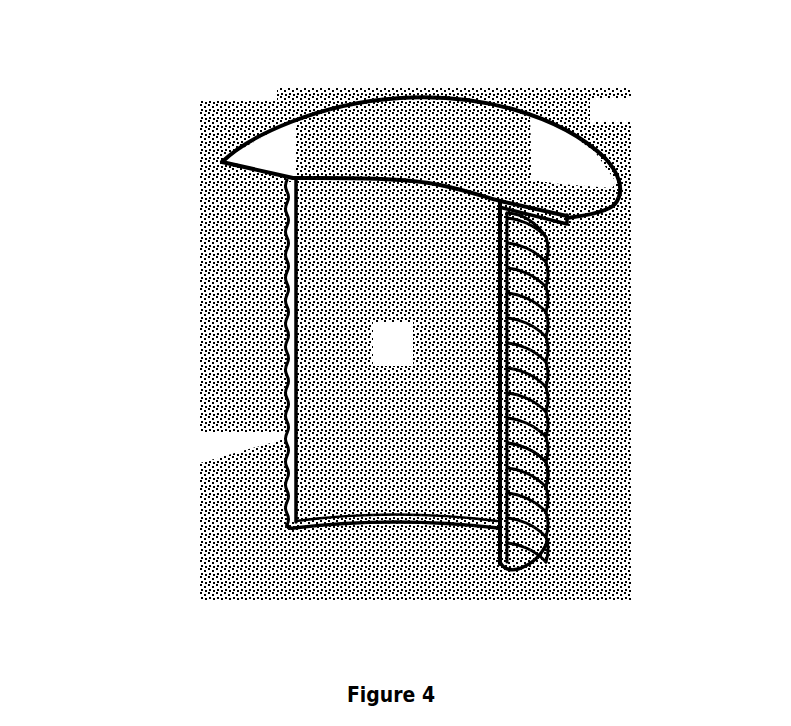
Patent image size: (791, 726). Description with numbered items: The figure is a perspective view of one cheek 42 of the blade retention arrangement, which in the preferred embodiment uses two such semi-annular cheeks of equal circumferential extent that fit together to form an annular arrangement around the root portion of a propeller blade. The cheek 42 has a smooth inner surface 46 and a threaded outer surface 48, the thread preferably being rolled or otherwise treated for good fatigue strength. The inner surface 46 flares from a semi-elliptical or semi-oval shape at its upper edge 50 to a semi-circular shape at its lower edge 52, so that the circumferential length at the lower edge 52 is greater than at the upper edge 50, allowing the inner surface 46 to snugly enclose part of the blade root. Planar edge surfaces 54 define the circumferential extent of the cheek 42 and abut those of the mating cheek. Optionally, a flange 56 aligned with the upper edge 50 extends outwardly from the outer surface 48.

The cheek 42 is at (183, 352).
The inner surface 46 is at (408, 358).
The threaded outer surface 48 is at (537, 347).
The upper edge 50 is at (368, 178).
The lower edge 52 is at (382, 522).
The edge surfaces 54 is at (295, 433).
The flange 56 is at (558, 188).